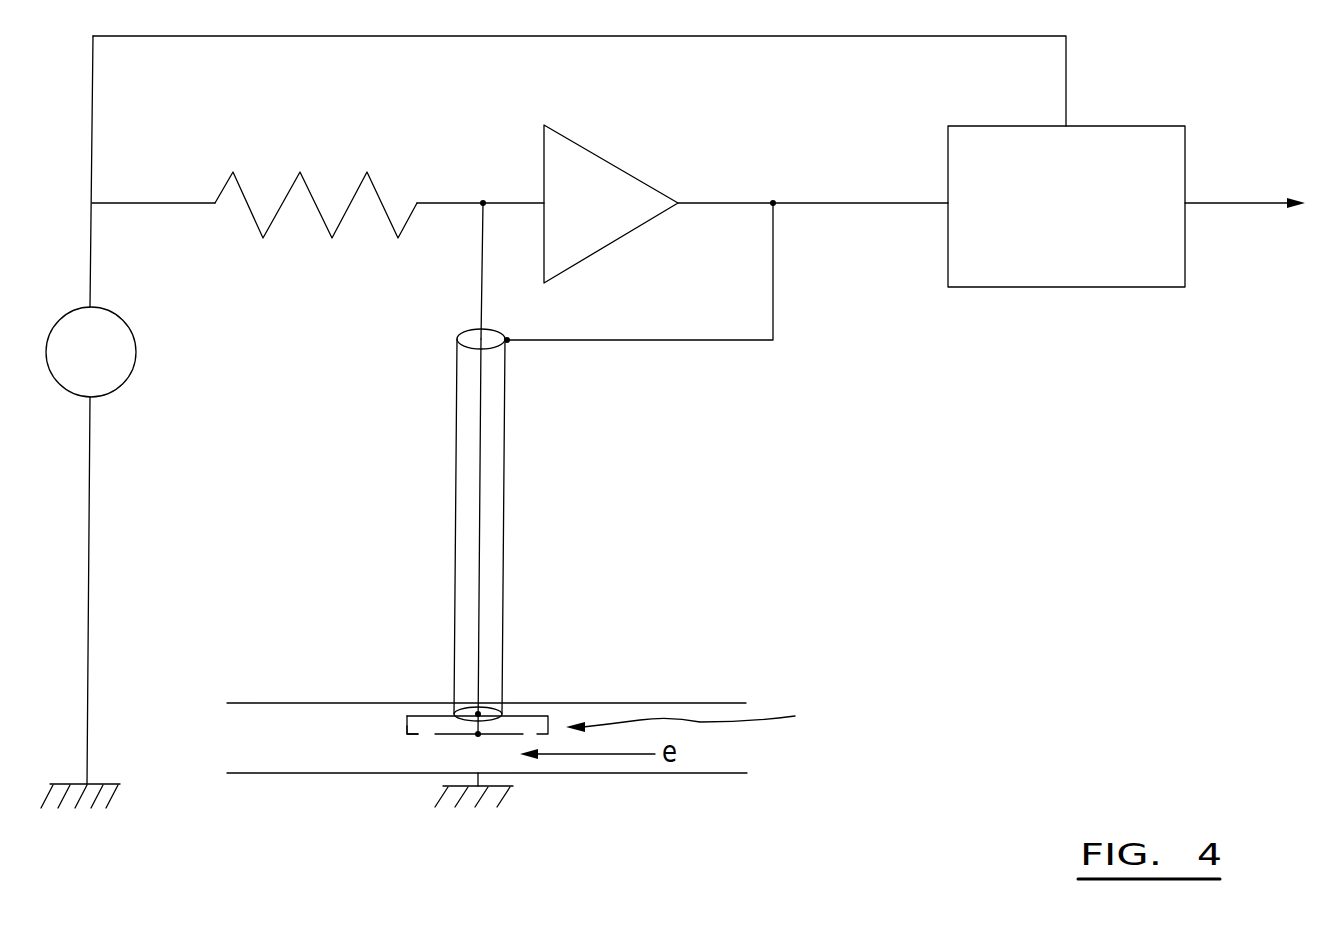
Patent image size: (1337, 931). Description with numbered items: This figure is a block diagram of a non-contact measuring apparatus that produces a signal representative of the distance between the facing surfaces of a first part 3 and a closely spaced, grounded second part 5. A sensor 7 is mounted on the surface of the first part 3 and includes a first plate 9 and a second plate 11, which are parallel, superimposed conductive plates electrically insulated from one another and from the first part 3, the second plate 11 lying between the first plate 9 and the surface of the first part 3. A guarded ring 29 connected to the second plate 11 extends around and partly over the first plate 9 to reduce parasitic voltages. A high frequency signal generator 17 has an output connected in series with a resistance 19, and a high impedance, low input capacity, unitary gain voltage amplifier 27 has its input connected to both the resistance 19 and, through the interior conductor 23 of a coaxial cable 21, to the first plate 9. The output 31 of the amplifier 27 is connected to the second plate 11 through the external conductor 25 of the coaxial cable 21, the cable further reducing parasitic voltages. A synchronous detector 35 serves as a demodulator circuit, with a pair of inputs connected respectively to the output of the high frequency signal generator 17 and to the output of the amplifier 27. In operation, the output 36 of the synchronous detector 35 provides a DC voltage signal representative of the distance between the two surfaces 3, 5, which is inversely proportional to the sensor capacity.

The first part 3 is at (623, 703).
The second part 5 is at (373, 774).
The sensor 7 is at (690, 714).
The first plate 9 is at (441, 736).
The second plate 11 is at (427, 716).
The high frequency signal generator 17 is at (137, 355).
The resistance 19 is at (332, 240).
The coaxial cable 21 is at (479, 533).
The interior conductor 23 is at (480, 500).
The external conductor 25 is at (505, 381).
The voltage amplifier 27 is at (611, 204).
The guarded ring 29 is at (410, 735).
The amplifier output 31 is at (727, 203).
The synchronous detector 35 is at (1066, 206).
The synchronous detector output 36 is at (1227, 203).